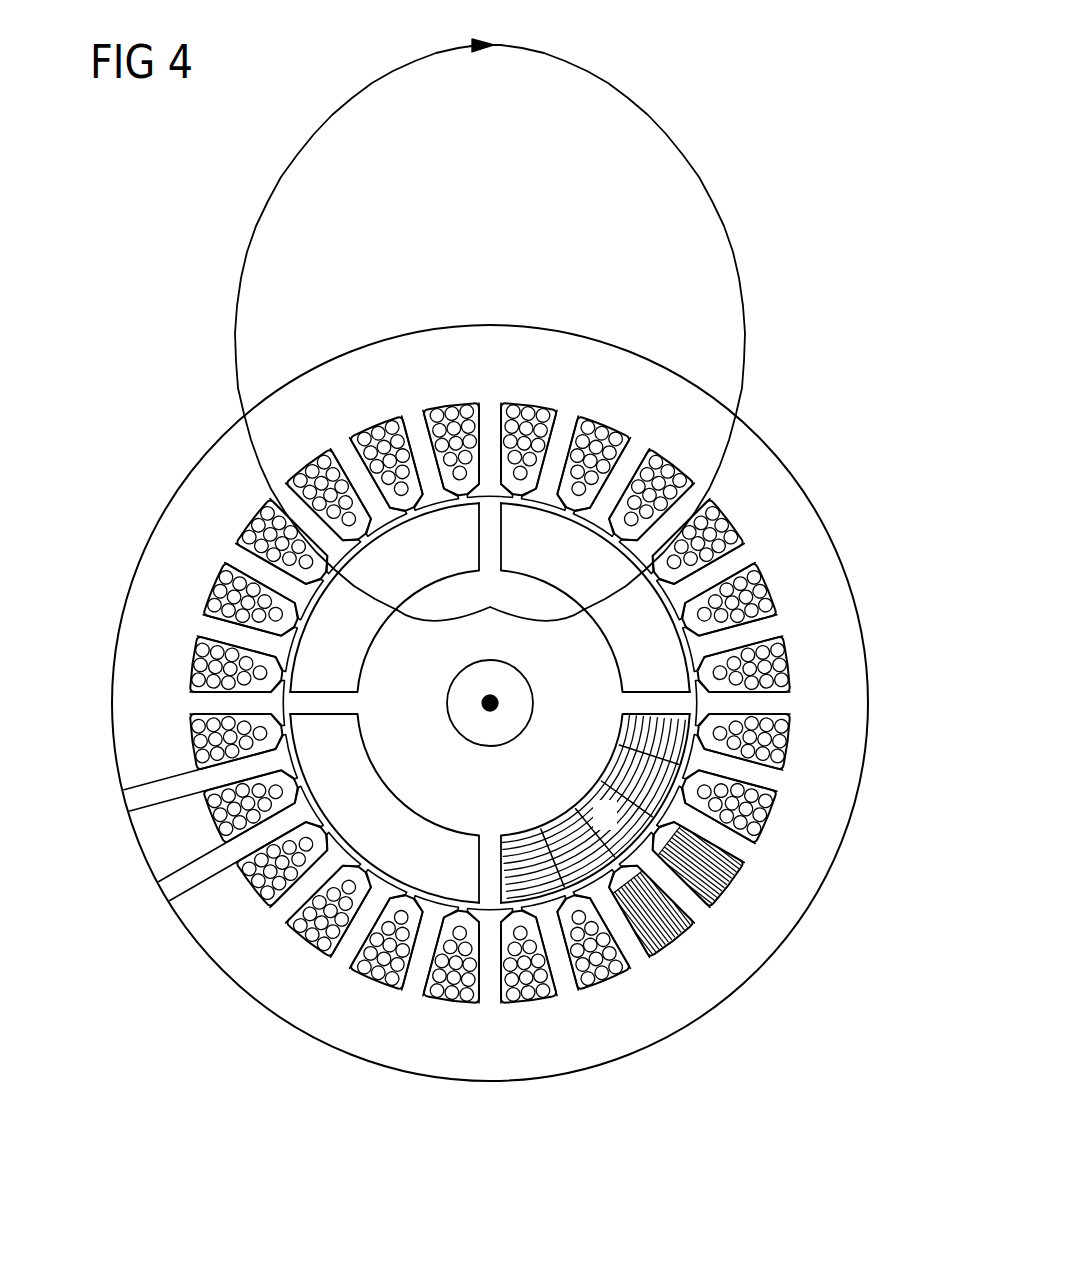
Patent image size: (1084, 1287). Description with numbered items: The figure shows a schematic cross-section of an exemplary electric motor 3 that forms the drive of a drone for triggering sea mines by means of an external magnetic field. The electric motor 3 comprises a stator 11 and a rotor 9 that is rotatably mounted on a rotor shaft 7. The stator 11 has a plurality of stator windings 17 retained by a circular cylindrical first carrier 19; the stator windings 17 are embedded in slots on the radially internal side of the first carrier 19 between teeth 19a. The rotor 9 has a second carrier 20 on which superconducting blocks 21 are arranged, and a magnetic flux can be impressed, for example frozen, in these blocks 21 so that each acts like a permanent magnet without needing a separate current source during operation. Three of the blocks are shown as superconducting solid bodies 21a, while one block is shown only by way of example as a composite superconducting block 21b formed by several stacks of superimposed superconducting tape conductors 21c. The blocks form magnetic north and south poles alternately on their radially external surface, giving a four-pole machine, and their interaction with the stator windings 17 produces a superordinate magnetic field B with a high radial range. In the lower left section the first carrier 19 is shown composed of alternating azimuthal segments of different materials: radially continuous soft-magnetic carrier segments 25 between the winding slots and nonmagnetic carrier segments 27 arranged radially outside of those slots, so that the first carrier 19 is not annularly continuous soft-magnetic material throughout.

The electric motor 3 is at (151, 231).
The superordinate magnetic field B is at (538, 58).
The rotor shaft 7 is at (515, 700).
The rotor 9 is at (300, 703).
The stator 11 is at (656, 1008).
The stator winding 17 is at (745, 507).
The first carrier 19 is at (822, 790).
The teeth 19a is at (720, 641).
The second carrier 20 is at (496, 757).
The permanent magnet 21 is at (752, 903).
The superconducting block 21a is at (645, 642).
The composite superconducting block 21b is at (506, 834).
The superconducting tape conductors 21c is at (542, 832).
The soft-magnetic carrier segments 25 is at (178, 885).
The nonmagnetic carrier segments 27 is at (167, 837).